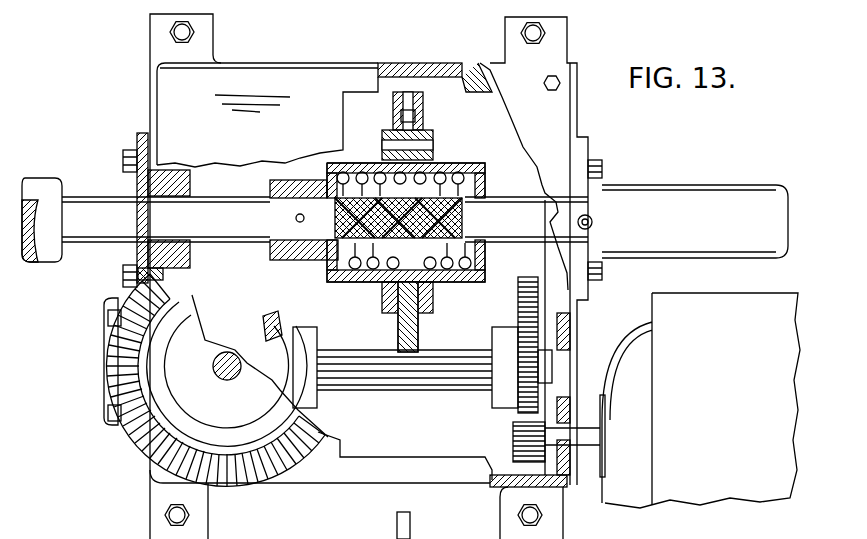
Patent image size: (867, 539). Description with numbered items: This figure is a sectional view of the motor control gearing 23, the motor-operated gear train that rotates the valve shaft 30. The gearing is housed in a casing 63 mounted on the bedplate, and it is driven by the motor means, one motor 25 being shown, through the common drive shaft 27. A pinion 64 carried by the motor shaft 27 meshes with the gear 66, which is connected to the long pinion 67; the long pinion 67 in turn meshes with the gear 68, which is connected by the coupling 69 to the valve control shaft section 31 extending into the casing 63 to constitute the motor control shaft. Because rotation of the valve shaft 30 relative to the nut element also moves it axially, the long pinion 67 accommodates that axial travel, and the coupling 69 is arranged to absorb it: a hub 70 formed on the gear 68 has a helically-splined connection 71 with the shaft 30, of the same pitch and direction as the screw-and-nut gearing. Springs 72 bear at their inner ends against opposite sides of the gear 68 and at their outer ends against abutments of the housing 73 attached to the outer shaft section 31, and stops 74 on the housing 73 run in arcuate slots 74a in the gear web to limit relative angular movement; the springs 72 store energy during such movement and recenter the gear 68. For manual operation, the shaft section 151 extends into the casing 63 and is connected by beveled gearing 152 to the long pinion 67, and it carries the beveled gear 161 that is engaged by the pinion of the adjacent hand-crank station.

The motor control gearing 23 is at (224, 149).
The motor 25 is at (645, 342).
The common drive shaft 27 is at (605, 458).
The valve shaft 30 is at (53, 169).
The valve control shaft section 31 is at (100, 226).
The casing 63 is at (311, 73).
The pinion 64 is at (512, 440).
The gear 66 is at (516, 310).
The long pinion 67 is at (418, 380).
The gear 68 is at (415, 345).
The coupling 69 is at (471, 151).
The hub 70 is at (385, 178).
The helically-splined connection 71 is at (468, 215).
The springs 72 is at (484, 264).
The housing 73 is at (483, 172).
The stops 74 is at (430, 130).
The arcuate slots 74a is at (398, 120).
The shaft section 151 is at (226, 379).
The beveled gearing 152 is at (262, 318).
The beveled gear 161 is at (148, 440).